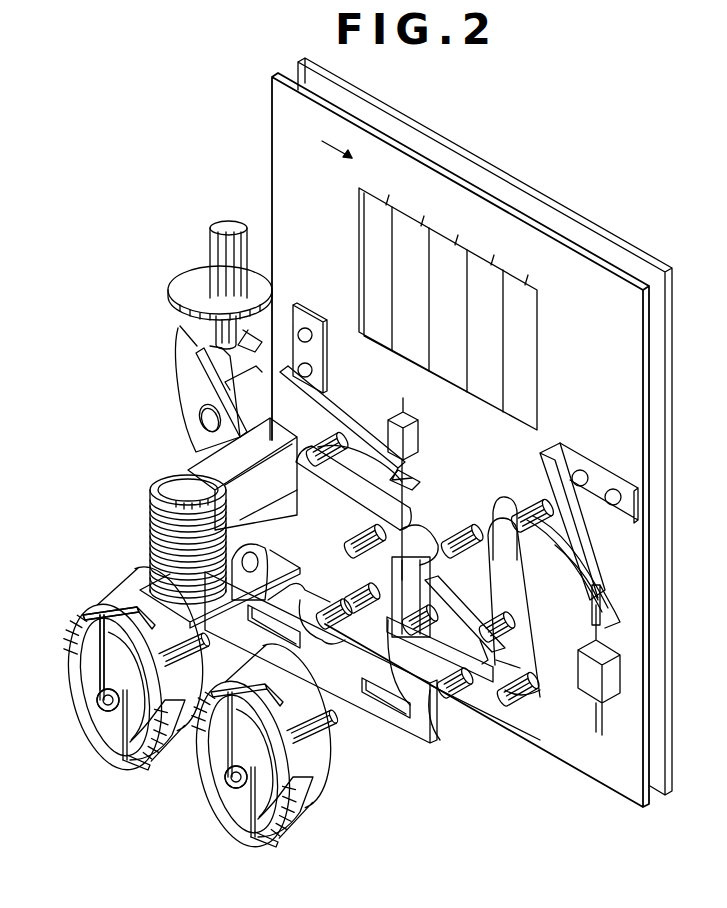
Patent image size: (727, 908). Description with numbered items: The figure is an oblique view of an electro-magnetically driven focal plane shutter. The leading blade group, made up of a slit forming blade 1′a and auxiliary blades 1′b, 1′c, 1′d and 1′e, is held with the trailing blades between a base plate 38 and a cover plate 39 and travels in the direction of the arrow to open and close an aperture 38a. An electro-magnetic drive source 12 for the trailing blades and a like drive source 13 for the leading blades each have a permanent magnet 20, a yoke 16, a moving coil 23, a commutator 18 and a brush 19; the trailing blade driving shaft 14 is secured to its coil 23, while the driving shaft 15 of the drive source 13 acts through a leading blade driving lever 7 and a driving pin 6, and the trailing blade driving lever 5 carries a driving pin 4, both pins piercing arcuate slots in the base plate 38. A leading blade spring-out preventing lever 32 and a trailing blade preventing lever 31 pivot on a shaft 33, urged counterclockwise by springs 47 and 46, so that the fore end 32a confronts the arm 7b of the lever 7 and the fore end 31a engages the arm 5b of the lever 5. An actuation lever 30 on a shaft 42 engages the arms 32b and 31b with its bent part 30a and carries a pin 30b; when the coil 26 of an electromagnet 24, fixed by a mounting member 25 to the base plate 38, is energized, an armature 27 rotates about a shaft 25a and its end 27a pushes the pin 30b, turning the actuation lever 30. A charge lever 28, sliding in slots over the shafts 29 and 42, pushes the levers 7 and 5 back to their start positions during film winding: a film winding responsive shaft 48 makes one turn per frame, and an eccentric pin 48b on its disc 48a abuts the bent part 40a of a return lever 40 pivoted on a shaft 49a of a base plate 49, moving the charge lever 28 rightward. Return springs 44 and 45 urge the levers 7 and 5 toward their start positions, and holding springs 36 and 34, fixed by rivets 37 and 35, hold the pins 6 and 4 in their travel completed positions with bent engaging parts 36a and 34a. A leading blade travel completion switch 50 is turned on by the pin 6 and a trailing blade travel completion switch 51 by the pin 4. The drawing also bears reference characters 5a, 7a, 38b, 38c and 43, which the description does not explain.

The slit forming blade 1′a is at (382, 205).
The auxiliary blade 1′b is at (416, 226).
The auxiliary blade 1′c is at (449, 245).
The auxiliary blade 1′d is at (485, 265).
The auxiliary blade 1′e is at (520, 285).
The trailing blade driving pin 4 is at (280, 444).
The trailing blade driving lever 5 is at (310, 482).
The lever arm roller 5a is at (358, 622).
The arm of trailing blade driving lever 5b is at (425, 555).
The leading blade driving pin 6 is at (528, 515).
The leading blade driving lever 7 is at (496, 515).
The lever end roller 7a is at (538, 695).
The arm of leading blade driving lever 7b is at (512, 667).
The electro-magnetic drive source for trailing shutter blades 12 is at (124, 676).
The electro-magnetic drive source for leading shutter blades 13 is at (240, 830).
The trailing blade driving shaft 14 is at (380, 535).
The leading blade driving shaft 15 is at (504, 615).
The yoke 16 is at (70, 660).
The commutator 18 is at (95, 700).
The brush 19 is at (100, 613).
The permanent magnet 20 is at (85, 615).
The moving coil 23 is at (160, 748).
The electromagnet 24 is at (148, 541).
The mounting member 25 is at (170, 475).
The shaft 25a is at (196, 487).
The coil 26 is at (152, 520).
The armature 27 is at (150, 590).
The end of armature 27a is at (268, 555).
The charge lever 28 is at (428, 745).
The shaft 29 is at (508, 710).
The actuation lever 30 is at (318, 600).
The bent part of actuation lever 30a is at (430, 720).
The pin 30b is at (270, 645).
The trailing blade spring-out preventing lever 31 is at (440, 576).
The fore end of trailing blade blocking lever 31a is at (430, 540).
The arm of trailing blade blocking lever 31b is at (392, 712).
The leading blade spring-out preventing lever 32 is at (458, 640).
The fore end of leading blade blocking lever 32a is at (490, 680).
The arm of leading blade blocking lever 32b is at (385, 700).
The shaft 33 is at (445, 695).
The holding spring 34 is at (320, 400).
The bent engaging part 34a is at (404, 478).
The rivet 35 is at (313, 334).
The holding spring 36 is at (560, 458).
The bent engaging part 36a is at (605, 592).
The rivet 37 is at (612, 490).
The base plate 38 is at (588, 252).
The aperture 38a is at (537, 316).
The panel portion 38b is at (590, 570).
The panel portion 38c is at (355, 455).
The cover plate 39 is at (640, 262).
The return lever 40 is at (192, 388).
The bent part of return lever 40a is at (180, 336).
The shaft 42 is at (322, 645).
The roller 43 is at (458, 530).
The return spring 44 is at (575, 540).
The return spring 45 is at (330, 445).
The spring 46 is at (460, 700).
The spring 47 is at (505, 715).
The film winding responsive shaft 48 is at (232, 228).
The disc 48a is at (196, 268).
The pin 48b is at (190, 314).
The base plate 49 is at (254, 338).
The shaft 49a is at (198, 362).
The leading blade travel completion switch 50 is at (612, 685).
The trailing blade travel completion switch 51 is at (415, 428).